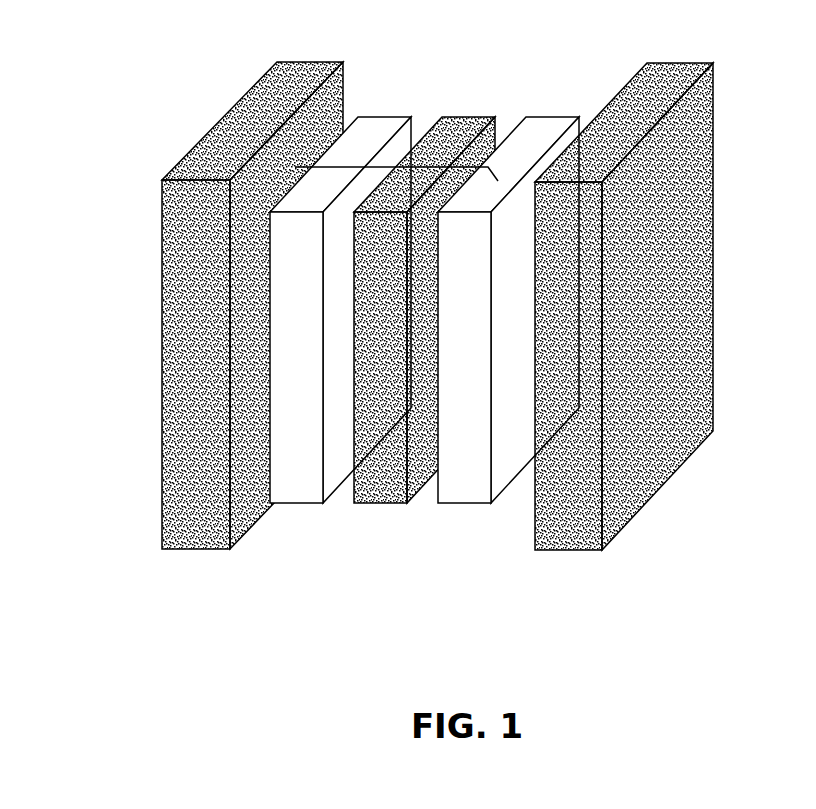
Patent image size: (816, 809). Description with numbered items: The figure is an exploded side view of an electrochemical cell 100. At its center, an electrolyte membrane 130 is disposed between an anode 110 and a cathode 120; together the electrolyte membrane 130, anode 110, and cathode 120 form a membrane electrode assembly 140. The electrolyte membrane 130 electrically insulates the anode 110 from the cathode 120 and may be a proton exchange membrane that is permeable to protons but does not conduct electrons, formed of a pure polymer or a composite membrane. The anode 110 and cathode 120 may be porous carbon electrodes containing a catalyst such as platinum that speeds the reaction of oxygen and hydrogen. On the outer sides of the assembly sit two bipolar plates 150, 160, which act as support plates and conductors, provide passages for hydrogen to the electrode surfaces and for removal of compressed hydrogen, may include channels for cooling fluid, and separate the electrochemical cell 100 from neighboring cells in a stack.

The electrochemical cell 100 is at (375, 322).
The anode 110 is at (283, 508).
The cathode 120 is at (458, 507).
The electrolyte membrane 130 is at (375, 507).
The membrane electrode assembly 140 is at (390, 164).
The bipolar plate 150 is at (190, 552).
The bipolar plate 160 is at (557, 552).